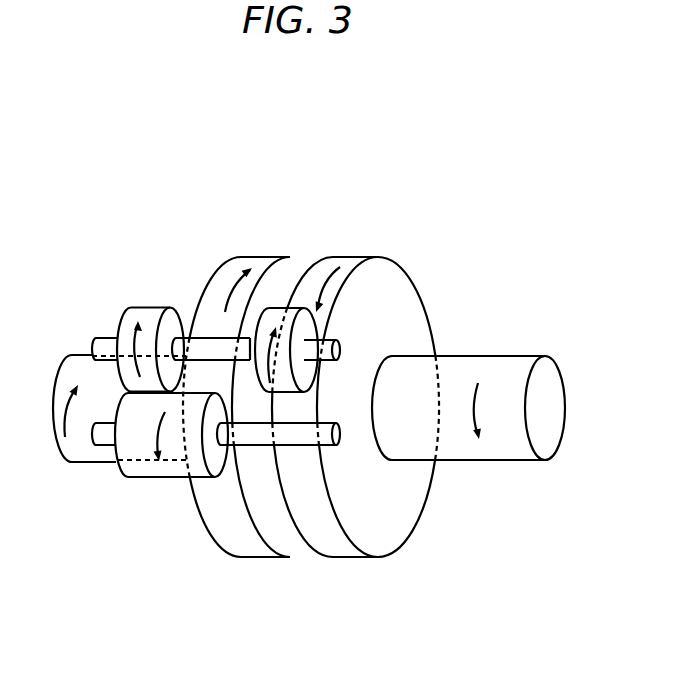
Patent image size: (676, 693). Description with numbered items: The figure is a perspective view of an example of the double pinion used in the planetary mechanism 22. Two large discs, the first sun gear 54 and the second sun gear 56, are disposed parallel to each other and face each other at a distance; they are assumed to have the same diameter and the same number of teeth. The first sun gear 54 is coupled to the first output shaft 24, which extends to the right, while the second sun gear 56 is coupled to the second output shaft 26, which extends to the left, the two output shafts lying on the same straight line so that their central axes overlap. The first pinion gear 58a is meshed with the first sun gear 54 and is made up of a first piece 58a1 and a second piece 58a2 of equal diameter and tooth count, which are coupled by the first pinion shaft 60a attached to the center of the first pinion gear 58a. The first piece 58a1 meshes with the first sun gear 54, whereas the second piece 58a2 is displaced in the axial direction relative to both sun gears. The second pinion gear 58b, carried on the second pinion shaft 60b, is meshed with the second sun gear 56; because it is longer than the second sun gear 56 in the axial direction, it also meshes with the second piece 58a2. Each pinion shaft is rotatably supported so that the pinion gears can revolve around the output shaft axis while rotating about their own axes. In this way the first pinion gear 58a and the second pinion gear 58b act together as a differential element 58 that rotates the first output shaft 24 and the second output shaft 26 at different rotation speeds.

The planetary mechanism 22 is at (312, 160).
The first output shaft 24 is at (494, 356).
The second output shaft 26 is at (72, 354).
The first sun gear 54 is at (345, 558).
The second sun gear 56 is at (262, 558).
The differential element 58 is at (141, 186).
The first pinion gear 58a is at (222, 175).
The first piece 58a1 is at (285, 308).
The second piece 58a2 is at (154, 307).
The second pinion gear 58b is at (136, 478).
The first pinion shaft 60a is at (73, 353).
The second pinion shaft 60b is at (253, 444).